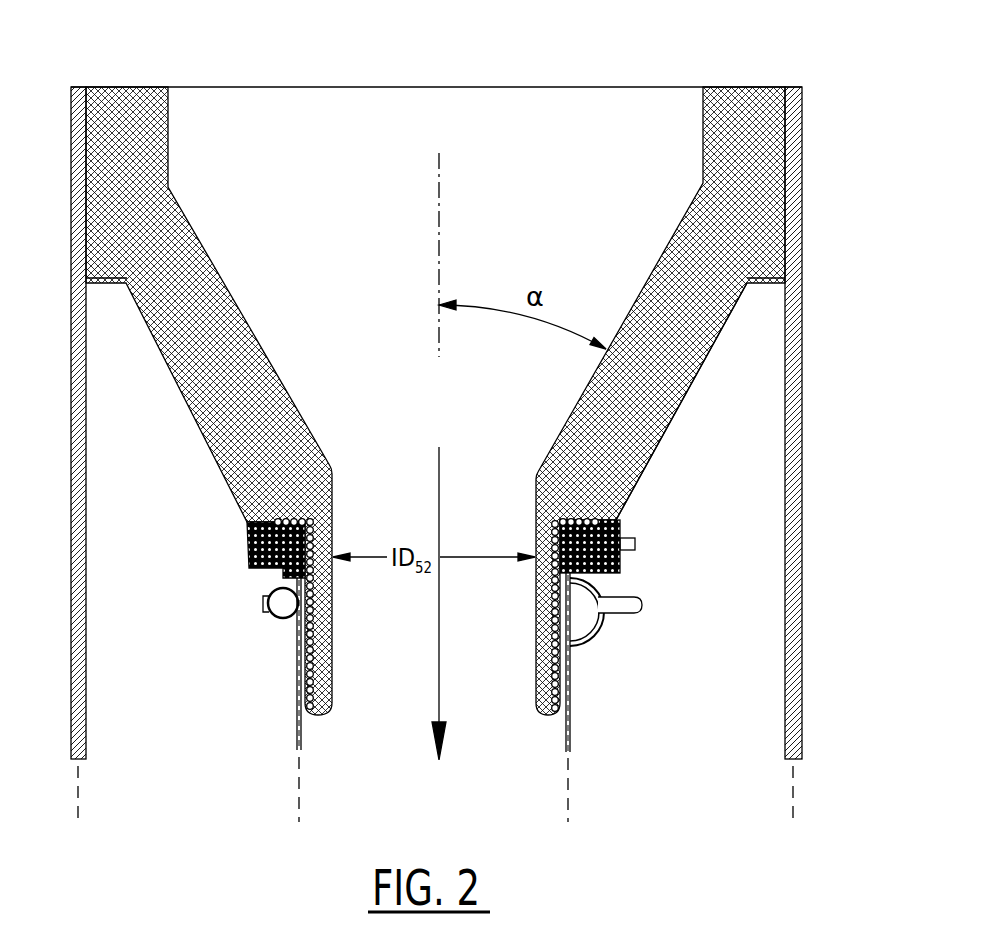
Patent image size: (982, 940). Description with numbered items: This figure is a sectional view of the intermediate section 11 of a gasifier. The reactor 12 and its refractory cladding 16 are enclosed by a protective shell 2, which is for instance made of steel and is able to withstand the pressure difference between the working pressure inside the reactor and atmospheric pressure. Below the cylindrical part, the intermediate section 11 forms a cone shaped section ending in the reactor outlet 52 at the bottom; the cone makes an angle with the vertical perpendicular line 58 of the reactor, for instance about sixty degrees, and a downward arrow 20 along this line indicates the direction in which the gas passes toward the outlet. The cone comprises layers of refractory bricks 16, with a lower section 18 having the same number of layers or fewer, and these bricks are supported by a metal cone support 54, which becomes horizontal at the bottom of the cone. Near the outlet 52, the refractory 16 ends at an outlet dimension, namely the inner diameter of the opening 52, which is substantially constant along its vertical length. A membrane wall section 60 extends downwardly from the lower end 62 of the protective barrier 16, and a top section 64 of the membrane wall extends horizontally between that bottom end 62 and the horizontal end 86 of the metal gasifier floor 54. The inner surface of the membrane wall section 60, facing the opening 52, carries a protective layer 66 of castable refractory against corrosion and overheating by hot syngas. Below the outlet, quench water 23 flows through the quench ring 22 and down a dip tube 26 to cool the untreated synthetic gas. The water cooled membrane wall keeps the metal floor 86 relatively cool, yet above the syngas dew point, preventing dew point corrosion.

The protective shell 2 is at (799, 88).
The intermediate section 11 is at (170, 475).
The reactor 12 is at (382, 153).
The refractory cladding 16 is at (726, 130).
The lower section 18 is at (198, 370).
The flow direction 20 is at (436, 588).
The quench ring 22 is at (600, 638).
The quench water 23 is at (642, 609).
The dip tube 26 is at (572, 740).
The reactor outlet 52 is at (526, 625).
The metal cone support 54 is at (640, 456).
The vertical perpendicular line 58 is at (440, 229).
The membrane wall section 60 is at (308, 623).
The lower end of the protective barrier 62 is at (327, 518).
The top section 64 is at (575, 521).
The protective layer 66 is at (320, 676).
The horizontal end of the metal gasifier floor 86 is at (278, 530).